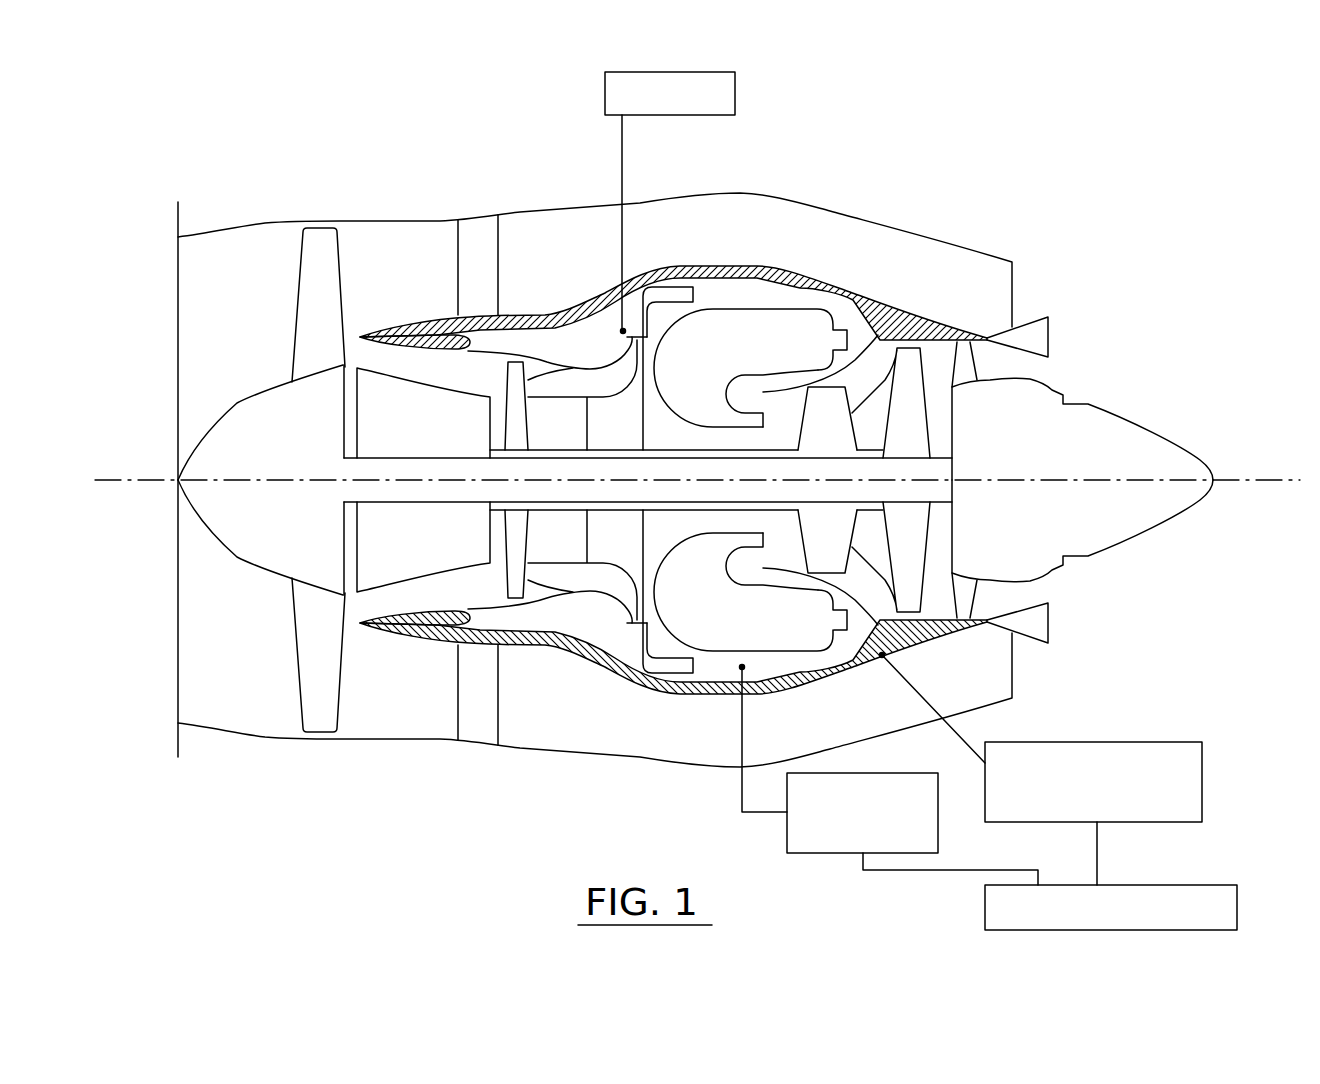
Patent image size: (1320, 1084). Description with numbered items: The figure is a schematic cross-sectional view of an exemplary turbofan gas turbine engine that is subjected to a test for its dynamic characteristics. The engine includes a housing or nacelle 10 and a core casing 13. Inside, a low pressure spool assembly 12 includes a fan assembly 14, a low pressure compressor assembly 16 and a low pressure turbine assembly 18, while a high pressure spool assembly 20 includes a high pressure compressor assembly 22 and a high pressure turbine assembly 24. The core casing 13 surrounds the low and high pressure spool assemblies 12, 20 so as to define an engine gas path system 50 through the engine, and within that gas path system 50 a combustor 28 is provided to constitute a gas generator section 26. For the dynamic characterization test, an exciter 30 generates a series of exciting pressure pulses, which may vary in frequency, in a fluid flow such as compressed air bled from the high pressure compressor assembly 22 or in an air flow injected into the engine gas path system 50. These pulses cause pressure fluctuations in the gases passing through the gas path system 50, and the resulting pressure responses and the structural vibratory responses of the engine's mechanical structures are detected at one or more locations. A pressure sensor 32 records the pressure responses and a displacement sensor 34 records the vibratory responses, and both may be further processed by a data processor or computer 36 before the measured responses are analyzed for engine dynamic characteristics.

The nacelle 10 is at (643, 203).
The low pressure spool assembly 12 is at (432, 455).
The core casing 13 is at (688, 263).
The fan assembly 14 is at (298, 283).
The low pressure compressor assembly 16 is at (377, 417).
The low pressure turbine assembly 18 is at (925, 338).
The high pressure spool assembly 20 is at (570, 450).
The high pressure compressor assembly 22 is at (543, 347).
The high pressure turbine assembly 24 is at (810, 320).
The gas generator section 26 is at (757, 297).
The combustor 28 is at (798, 327).
The exciter 30 is at (735, 92).
The pressure sensor 32 is at (837, 853).
The displacement sensor 34 is at (1090, 742).
The data processor 36 is at (1237, 905).
The engine gas path system 50 is at (716, 667).